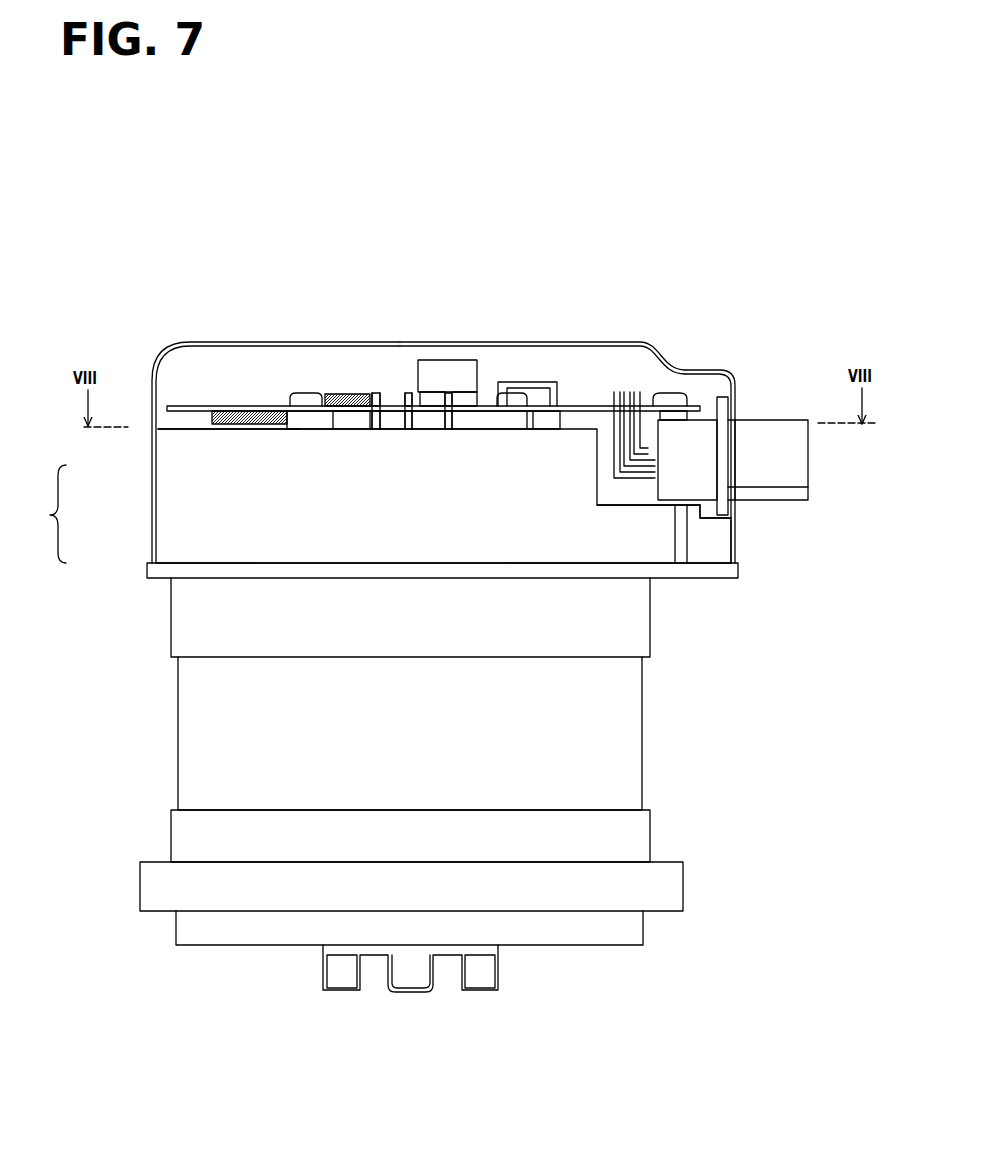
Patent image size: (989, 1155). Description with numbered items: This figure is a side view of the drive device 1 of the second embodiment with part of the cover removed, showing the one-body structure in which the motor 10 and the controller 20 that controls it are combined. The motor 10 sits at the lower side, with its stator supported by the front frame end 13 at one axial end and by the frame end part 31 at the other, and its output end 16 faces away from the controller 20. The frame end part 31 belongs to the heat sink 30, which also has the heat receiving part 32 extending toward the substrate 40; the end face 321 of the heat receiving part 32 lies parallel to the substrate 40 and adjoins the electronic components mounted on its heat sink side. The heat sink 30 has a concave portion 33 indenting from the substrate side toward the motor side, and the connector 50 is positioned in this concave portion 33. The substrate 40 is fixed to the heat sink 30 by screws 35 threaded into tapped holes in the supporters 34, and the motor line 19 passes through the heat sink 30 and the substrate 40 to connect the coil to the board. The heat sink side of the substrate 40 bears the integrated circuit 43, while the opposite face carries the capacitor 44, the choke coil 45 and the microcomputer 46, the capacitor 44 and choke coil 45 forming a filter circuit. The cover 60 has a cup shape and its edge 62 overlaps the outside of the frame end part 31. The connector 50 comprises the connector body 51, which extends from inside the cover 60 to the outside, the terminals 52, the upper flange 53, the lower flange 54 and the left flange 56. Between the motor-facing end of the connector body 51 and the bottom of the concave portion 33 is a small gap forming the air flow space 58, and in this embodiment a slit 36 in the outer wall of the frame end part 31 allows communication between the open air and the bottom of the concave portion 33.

The drive device 1 is at (633, 265).
The motor 10 is at (176, 734).
The front frame end 13 is at (237, 930).
The output end 16 is at (409, 982).
The motor line 19 is at (368, 422).
The controller 20 is at (162, 352).
The heat sink 30 is at (44, 514).
The frame end part 31 is at (185, 590).
The heat receiving part 32 is at (230, 458).
The end face 321 is at (200, 426).
The concave portion 33 is at (615, 495).
The supporter 34 is at (325, 417).
The screw 35 is at (304, 393).
The slit 36 is at (688, 566).
The substrate 40 is at (208, 410).
The integrated circuit 43 is at (168, 412).
The capacitor 44 is at (430, 361).
The choke coil 45 is at (546, 384).
The microcomputer 46 is at (376, 394).
The connector 50 is at (778, 418).
The connector body 51 is at (800, 457).
The terminals 52 is at (615, 447).
The upper flange 53 is at (722, 400).
The lower flange 54 is at (733, 507).
The left flange 56 is at (723, 485).
The air flow space 58 is at (668, 566).
The cover 60 is at (645, 343).
The edge 62 is at (737, 550).